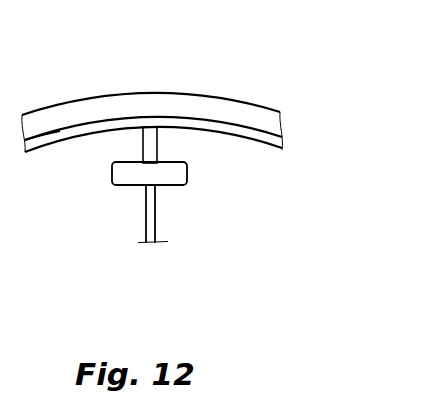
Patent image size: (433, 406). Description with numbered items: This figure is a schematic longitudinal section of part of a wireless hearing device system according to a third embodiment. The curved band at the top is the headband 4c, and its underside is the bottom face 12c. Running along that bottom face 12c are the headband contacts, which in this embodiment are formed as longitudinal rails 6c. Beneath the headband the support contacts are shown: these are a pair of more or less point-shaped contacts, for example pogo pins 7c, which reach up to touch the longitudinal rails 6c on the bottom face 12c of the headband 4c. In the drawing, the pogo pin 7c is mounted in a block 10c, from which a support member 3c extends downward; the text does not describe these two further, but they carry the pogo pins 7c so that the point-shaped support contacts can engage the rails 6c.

The headband 4c is at (212, 108).
The bottom face 12c is at (257, 148).
The longitudinal rails 6c is at (70, 133).
The pogo pins 7c is at (157, 152).
The mounting block 10c is at (118, 183).
The support rod 3c is at (156, 215).